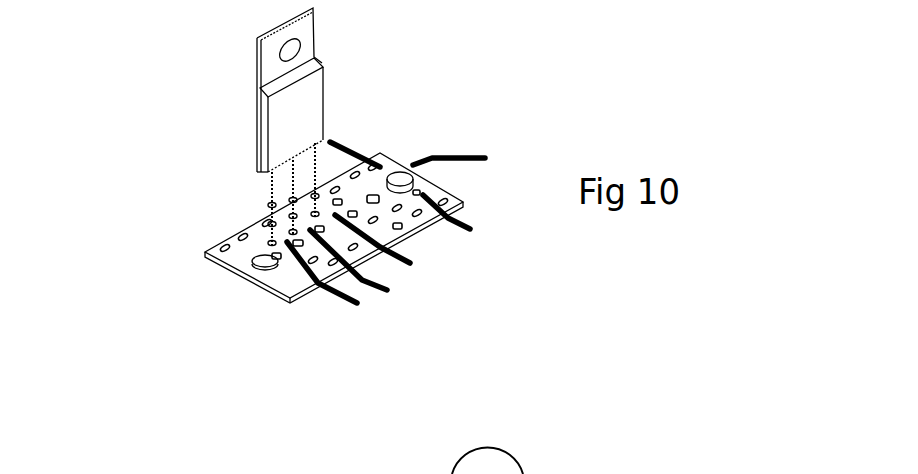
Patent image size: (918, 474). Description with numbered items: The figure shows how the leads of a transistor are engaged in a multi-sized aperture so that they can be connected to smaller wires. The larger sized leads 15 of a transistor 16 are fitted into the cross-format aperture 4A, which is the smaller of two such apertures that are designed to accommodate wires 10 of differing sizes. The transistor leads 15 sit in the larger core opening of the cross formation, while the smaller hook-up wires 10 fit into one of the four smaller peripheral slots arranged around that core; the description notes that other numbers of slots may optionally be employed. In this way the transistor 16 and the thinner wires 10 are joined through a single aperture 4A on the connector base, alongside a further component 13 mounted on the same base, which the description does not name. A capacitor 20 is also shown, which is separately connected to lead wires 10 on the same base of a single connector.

The cross-format aperture 4A is at (254, 248).
The wires 10 is at (415, 264).
The capacitor 13 is at (446, 130).
The leads 15 is at (197, 194).
The transistor 16 is at (194, 236).
The capacitor 20 is at (552, 454).